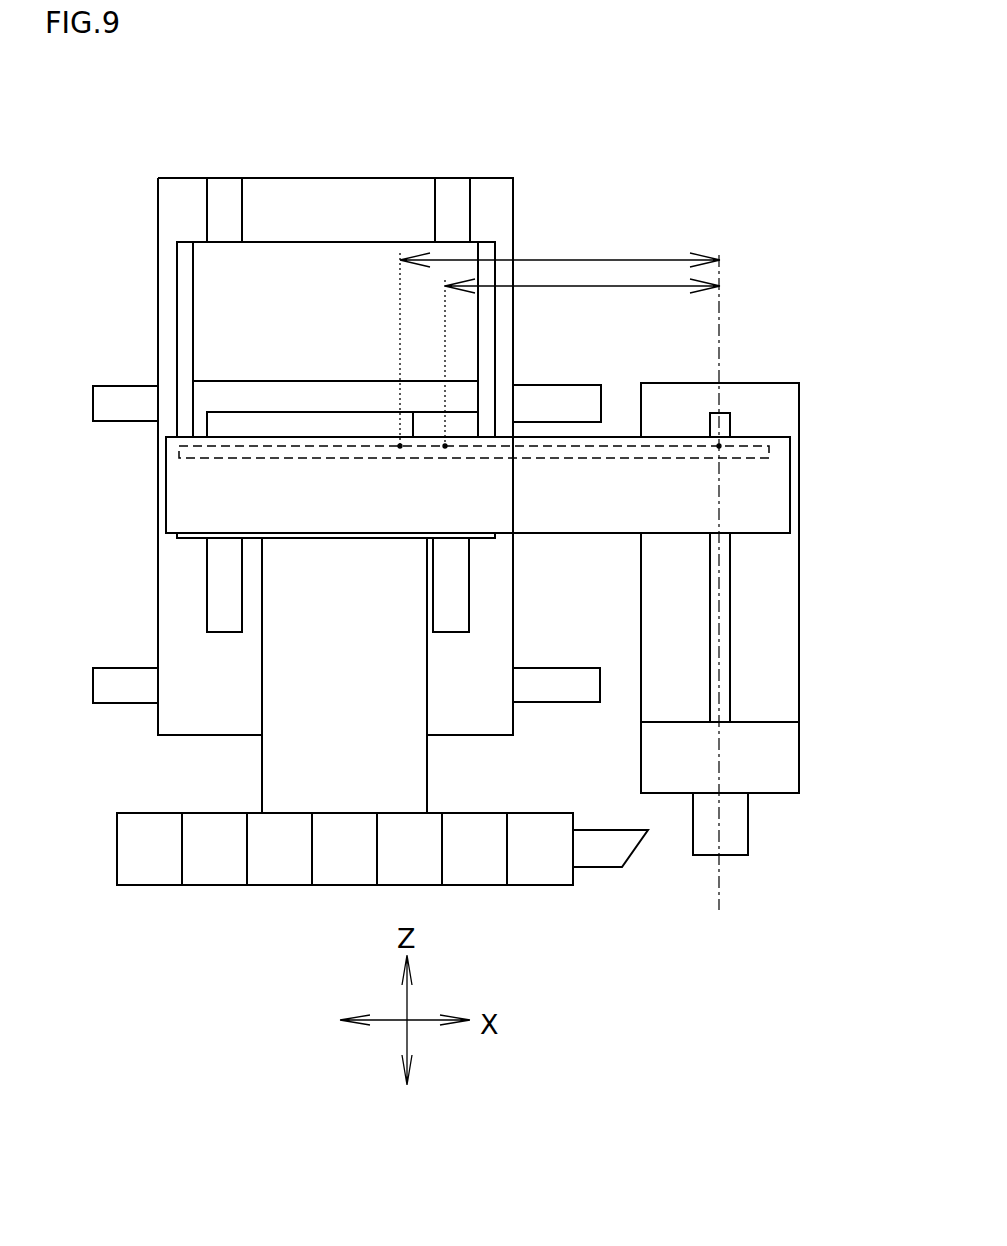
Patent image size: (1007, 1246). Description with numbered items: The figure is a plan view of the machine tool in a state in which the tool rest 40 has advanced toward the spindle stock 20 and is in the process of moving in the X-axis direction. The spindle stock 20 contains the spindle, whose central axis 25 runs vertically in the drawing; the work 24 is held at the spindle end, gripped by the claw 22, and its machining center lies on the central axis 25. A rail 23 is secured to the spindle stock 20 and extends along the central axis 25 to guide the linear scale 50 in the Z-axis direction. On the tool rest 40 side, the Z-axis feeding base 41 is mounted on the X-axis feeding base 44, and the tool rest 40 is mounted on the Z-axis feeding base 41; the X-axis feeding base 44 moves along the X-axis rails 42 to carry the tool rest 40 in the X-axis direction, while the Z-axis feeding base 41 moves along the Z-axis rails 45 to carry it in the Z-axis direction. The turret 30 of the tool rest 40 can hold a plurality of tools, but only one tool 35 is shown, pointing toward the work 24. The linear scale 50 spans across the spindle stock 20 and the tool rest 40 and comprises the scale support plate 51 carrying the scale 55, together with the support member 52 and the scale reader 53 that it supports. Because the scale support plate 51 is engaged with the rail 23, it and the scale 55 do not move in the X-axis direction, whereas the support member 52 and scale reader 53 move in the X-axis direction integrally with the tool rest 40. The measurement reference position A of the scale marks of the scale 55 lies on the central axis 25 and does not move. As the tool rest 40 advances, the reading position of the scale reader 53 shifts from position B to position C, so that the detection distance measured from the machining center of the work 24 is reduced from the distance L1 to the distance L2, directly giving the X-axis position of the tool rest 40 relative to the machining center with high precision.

The spindle stock 20 is at (800, 690).
The claw 22 is at (800, 763).
The rail 23 is at (731, 608).
The work 24 is at (748, 834).
The central axis 25 is at (720, 362).
The turret 30 is at (260, 890).
The tool 35 is at (620, 868).
The tool rest 40 is at (262, 591).
The Z-axis feeding base 41 is at (177, 298).
The X-axis rails 42 is at (93, 403).
The X-axis feeding base 44 is at (158, 620).
The Z-axis rails 45 is at (433, 210).
The linear scale 50 is at (591, 542).
The scale support plate 51 is at (753, 518).
The support member 52 is at (457, 420).
The scale reader 53 is at (470, 425).
The scale 55 is at (790, 447).
The measurement reference position A is at (719, 446).
The reading position B is at (400, 446).
The reading position C is at (445, 446).
The distance L1 is at (638, 258).
The detection distance L2 is at (676, 284).